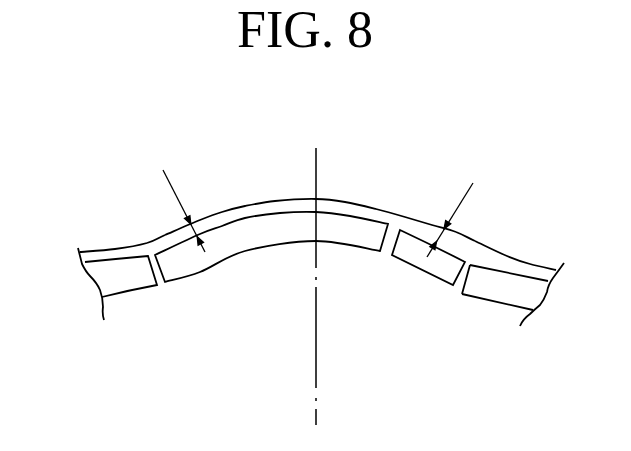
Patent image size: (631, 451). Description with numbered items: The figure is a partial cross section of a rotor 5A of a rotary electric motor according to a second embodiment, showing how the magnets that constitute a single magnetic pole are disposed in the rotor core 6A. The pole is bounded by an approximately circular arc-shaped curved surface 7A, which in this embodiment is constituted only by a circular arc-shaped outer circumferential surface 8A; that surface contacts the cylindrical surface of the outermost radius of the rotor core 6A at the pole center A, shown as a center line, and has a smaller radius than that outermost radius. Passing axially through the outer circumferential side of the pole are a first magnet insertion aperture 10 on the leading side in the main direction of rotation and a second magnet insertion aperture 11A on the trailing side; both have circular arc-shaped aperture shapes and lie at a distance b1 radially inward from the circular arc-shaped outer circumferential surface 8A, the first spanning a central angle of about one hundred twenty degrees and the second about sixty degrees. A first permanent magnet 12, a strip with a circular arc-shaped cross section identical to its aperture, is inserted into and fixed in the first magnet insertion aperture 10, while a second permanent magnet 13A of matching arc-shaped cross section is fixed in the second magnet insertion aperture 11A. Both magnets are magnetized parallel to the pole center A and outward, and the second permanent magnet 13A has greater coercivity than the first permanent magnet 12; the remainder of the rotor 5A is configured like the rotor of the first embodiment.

The rotor 5A is at (157, 118).
The rotor core 6A is at (110, 253).
The approximately circular arc-shaped curved surface 7A is at (245, 206).
The circular arc-shaped outer circumferential surface 8A is at (373, 207).
The first magnet insertion aperture 10 is at (181, 247).
The second magnet insertion aperture 11A is at (450, 256).
The first permanent magnet 12 is at (219, 249).
The second permanent magnet 13A is at (434, 269).
The distance b1 is at (316, 198).
The pole center A is at (312, 375).